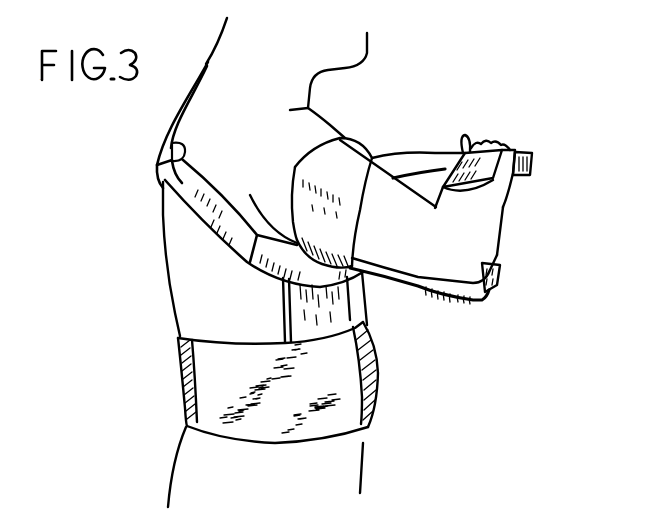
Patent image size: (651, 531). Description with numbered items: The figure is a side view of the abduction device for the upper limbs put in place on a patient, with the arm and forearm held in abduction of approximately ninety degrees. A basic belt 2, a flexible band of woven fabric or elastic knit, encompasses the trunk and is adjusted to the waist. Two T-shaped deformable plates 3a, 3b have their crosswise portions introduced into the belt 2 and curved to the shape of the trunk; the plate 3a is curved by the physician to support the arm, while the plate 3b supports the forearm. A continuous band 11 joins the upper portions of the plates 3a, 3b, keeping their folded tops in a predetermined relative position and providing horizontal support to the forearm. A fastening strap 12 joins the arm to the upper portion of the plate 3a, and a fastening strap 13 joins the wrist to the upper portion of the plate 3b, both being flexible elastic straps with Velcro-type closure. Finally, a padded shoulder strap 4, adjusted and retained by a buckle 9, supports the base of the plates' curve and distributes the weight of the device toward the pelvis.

The basic belt 2 is at (373, 398).
The deformable plate 3a is at (497, 287).
The deformable plate 3b is at (535, 168).
The shoulder strap 4 is at (200, 215).
The buckle 9 is at (160, 168).
The continuous band 11 is at (497, 245).
The fastening strap 12 is at (352, 148).
The fastening strap 13 is at (505, 204).